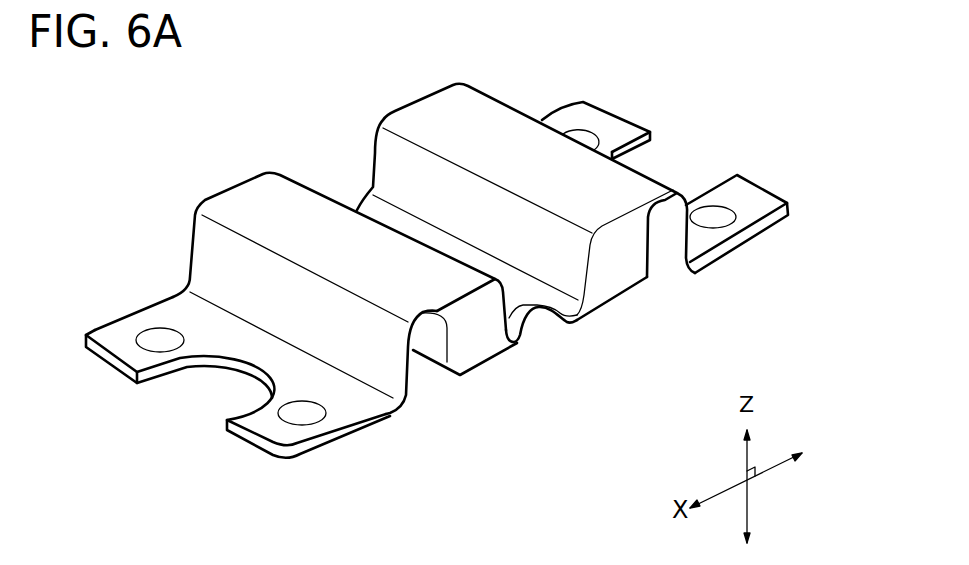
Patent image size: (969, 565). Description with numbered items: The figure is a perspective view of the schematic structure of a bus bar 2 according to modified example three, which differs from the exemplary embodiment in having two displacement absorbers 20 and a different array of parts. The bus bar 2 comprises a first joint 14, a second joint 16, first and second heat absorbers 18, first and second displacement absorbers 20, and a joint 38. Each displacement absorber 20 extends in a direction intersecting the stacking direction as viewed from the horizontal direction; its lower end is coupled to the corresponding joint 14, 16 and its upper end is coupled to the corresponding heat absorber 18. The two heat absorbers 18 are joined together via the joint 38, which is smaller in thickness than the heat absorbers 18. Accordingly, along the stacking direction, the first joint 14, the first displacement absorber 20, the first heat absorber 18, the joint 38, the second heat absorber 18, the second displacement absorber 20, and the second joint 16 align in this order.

The bus bar 2 is at (510, 518).
The first joint 14 is at (101, 327).
The second joint 16 is at (584, 101).
The heat absorber 18 is at (477, 350).
The displacement absorber 20 is at (413, 373).
The joint 38 is at (521, 318).